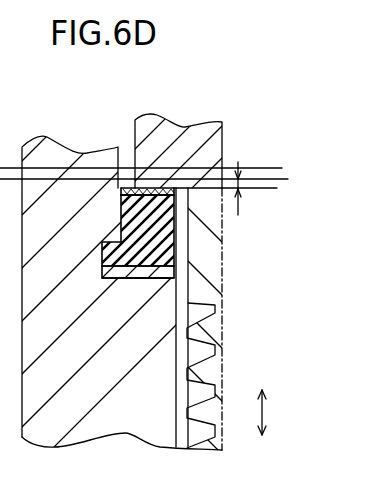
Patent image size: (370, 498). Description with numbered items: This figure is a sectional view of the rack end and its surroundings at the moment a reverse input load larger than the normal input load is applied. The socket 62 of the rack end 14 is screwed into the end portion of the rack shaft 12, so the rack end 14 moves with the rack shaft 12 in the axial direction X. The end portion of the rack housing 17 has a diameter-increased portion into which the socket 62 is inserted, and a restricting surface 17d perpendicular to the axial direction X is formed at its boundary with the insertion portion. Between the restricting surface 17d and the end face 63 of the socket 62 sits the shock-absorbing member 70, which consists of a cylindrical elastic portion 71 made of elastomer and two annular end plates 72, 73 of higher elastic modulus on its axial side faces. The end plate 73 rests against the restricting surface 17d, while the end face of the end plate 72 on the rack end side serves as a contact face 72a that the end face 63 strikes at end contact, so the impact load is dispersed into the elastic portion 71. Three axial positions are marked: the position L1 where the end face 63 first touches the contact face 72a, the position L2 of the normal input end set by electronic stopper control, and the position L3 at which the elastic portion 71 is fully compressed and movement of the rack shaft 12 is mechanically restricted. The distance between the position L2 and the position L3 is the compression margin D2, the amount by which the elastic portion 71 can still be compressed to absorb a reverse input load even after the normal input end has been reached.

The rack shaft 12 is at (222, 273).
The rack end 14 is at (185, 190).
The rack housing 17 is at (88, 440).
The restricting surface 17d is at (172, 285).
The socket 62 is at (171, 120).
The end face 63 is at (192, 189).
The shock-absorbing member 70 is at (125, 281).
The elastic portion 71 is at (129, 222).
The end plate 72 is at (122, 189).
The contact face 72a is at (131, 188).
The end plate 73 is at (100, 263).
The compression margin D2 is at (254, 193).
The position L1 is at (282, 168).
The position L2 is at (288, 179).
The position L3 is at (277, 189).
The axial direction X is at (261, 398).